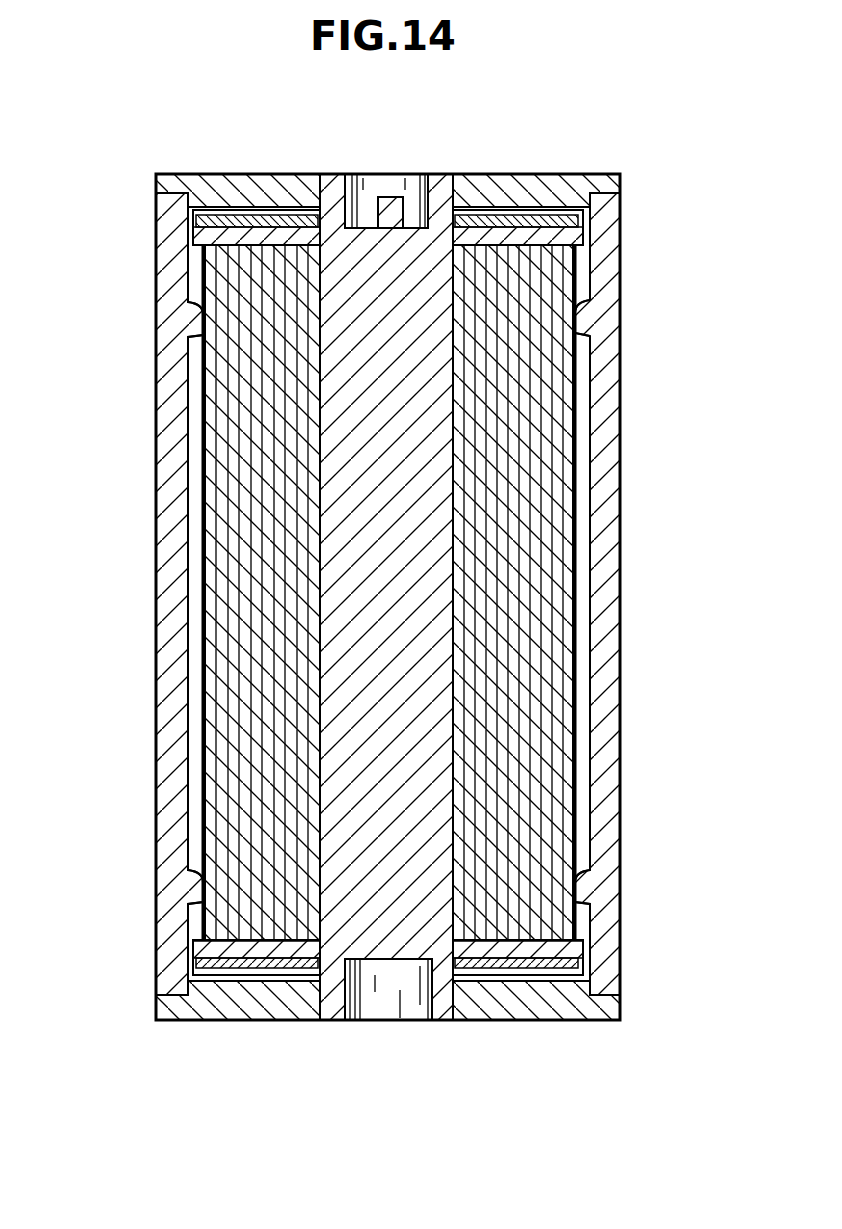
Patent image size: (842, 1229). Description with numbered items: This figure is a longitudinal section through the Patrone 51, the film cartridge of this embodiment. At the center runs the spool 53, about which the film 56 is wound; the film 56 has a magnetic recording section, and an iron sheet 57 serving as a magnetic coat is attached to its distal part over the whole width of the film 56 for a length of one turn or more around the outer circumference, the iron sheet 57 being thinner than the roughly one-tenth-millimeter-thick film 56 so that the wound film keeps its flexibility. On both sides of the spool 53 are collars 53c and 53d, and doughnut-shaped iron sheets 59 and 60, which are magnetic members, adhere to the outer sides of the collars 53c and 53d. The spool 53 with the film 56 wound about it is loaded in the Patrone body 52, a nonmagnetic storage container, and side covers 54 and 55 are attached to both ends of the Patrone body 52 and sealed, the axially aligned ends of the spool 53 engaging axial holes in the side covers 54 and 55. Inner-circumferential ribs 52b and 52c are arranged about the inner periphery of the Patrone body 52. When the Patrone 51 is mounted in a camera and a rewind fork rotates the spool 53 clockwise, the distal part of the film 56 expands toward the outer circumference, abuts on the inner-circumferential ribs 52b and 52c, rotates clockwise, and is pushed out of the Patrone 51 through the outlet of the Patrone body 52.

The Patrone 51 is at (632, 741).
The Patrone body 52 is at (605, 491).
The inner-circumferential rib 52b is at (583, 316).
The inner-circumferential rib 52c is at (578, 883).
The spool 53 is at (342, 299).
The collar 53c is at (567, 237).
The collar 53d is at (583, 950).
The side cover 54 is at (569, 188).
The side cover 55 is at (567, 1005).
The film 56 is at (540, 623).
The iron sheet 57 is at (576, 562).
The iron sheet 59 is at (585, 220).
The iron sheet 60 is at (580, 967).